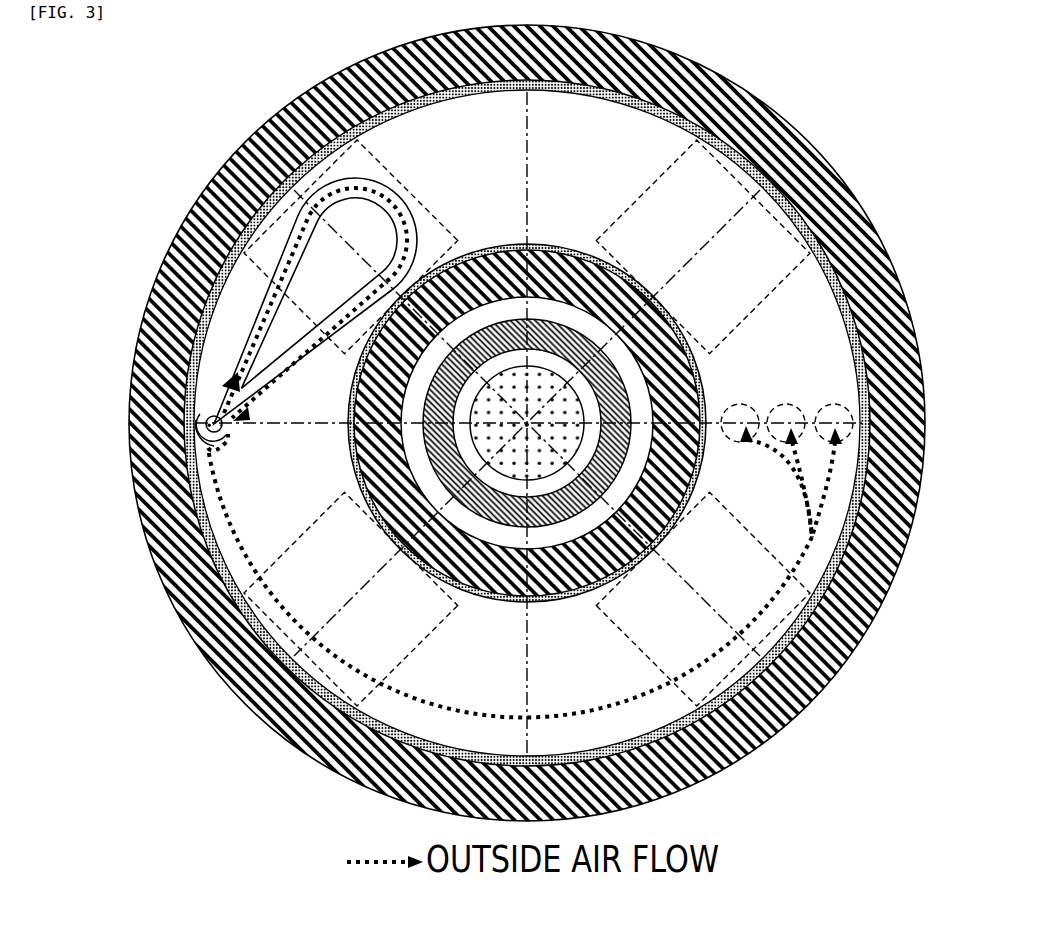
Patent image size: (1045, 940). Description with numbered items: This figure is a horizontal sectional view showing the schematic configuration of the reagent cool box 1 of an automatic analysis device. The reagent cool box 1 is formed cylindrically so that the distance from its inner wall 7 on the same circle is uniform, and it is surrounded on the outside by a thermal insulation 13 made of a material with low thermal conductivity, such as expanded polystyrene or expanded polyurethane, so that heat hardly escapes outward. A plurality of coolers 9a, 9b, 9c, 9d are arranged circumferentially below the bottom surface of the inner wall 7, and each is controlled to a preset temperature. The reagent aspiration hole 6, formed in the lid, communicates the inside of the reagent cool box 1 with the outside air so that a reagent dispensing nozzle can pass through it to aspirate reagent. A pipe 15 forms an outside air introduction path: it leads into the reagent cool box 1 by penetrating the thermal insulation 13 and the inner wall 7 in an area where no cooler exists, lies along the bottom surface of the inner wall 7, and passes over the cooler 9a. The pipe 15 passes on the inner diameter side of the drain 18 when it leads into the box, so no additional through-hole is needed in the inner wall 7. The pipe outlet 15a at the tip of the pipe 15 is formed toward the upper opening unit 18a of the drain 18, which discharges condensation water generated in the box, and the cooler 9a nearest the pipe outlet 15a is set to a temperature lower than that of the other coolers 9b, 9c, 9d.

The reagent cool box 1 is at (852, 122).
The reagent aspiration hole 6 is at (748, 405).
The inner wall 7 is at (878, 512).
The cooler 9a is at (253, 266).
The cooler 9b is at (385, 672).
The cooler 9c is at (792, 582).
The cooler 9d is at (683, 152).
The thermal insulation 13 is at (150, 290).
The pipe 15 is at (340, 181).
The pipe outlet 15a is at (225, 397).
The drain 18 is at (207, 412).
The upper opening unit 18a is at (198, 447).